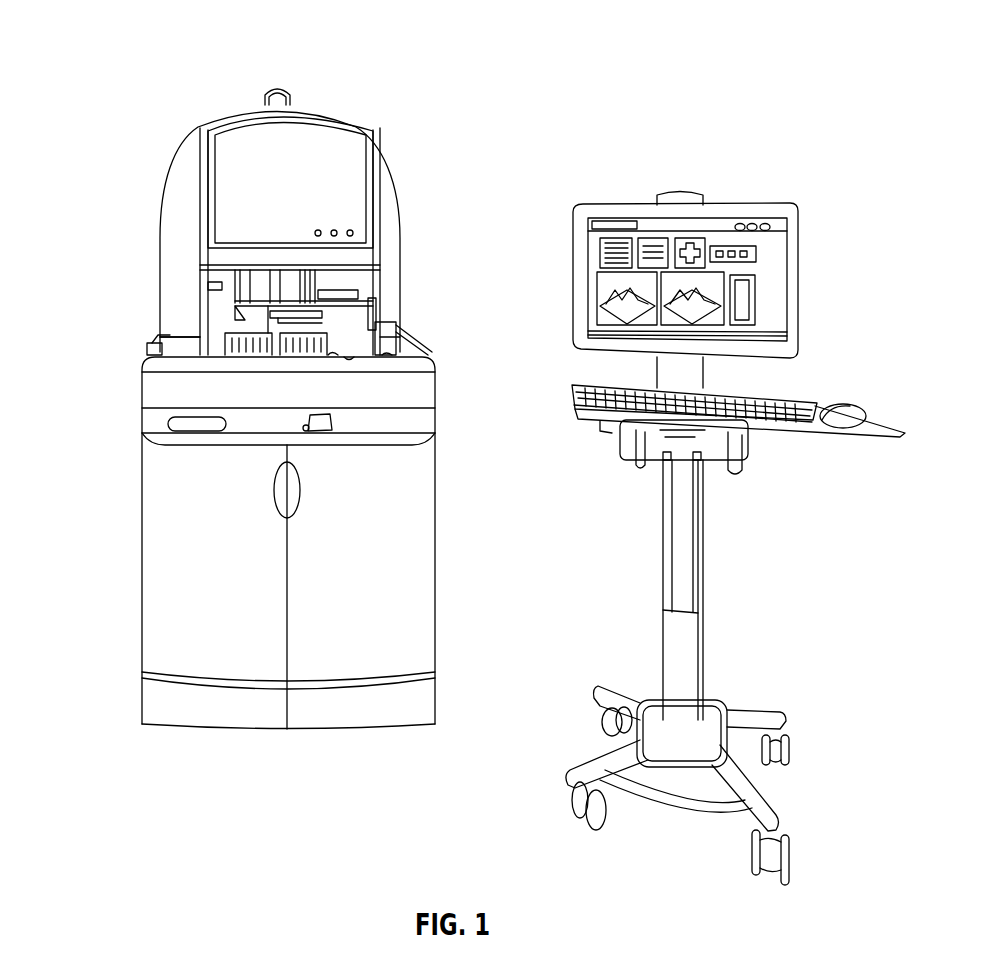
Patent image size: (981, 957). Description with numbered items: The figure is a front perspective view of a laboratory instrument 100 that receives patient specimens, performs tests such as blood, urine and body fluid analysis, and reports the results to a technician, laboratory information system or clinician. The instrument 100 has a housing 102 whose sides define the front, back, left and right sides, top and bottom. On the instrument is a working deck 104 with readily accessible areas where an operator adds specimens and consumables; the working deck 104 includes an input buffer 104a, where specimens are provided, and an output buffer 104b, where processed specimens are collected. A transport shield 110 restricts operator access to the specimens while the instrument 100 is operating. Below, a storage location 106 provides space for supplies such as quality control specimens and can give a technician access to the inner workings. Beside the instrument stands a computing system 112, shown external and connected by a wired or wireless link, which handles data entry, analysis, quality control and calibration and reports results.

The laboratory instrument 100 is at (147, 44).
The housing 102 is at (184, 146).
The working deck 104 is at (222, 320).
The input buffer 104a is at (407, 350).
The output buffer 104b is at (179, 346).
The storage location 106 is at (141, 655).
The transport shield 110 is at (327, 176).
The computing system 112 is at (742, 181).